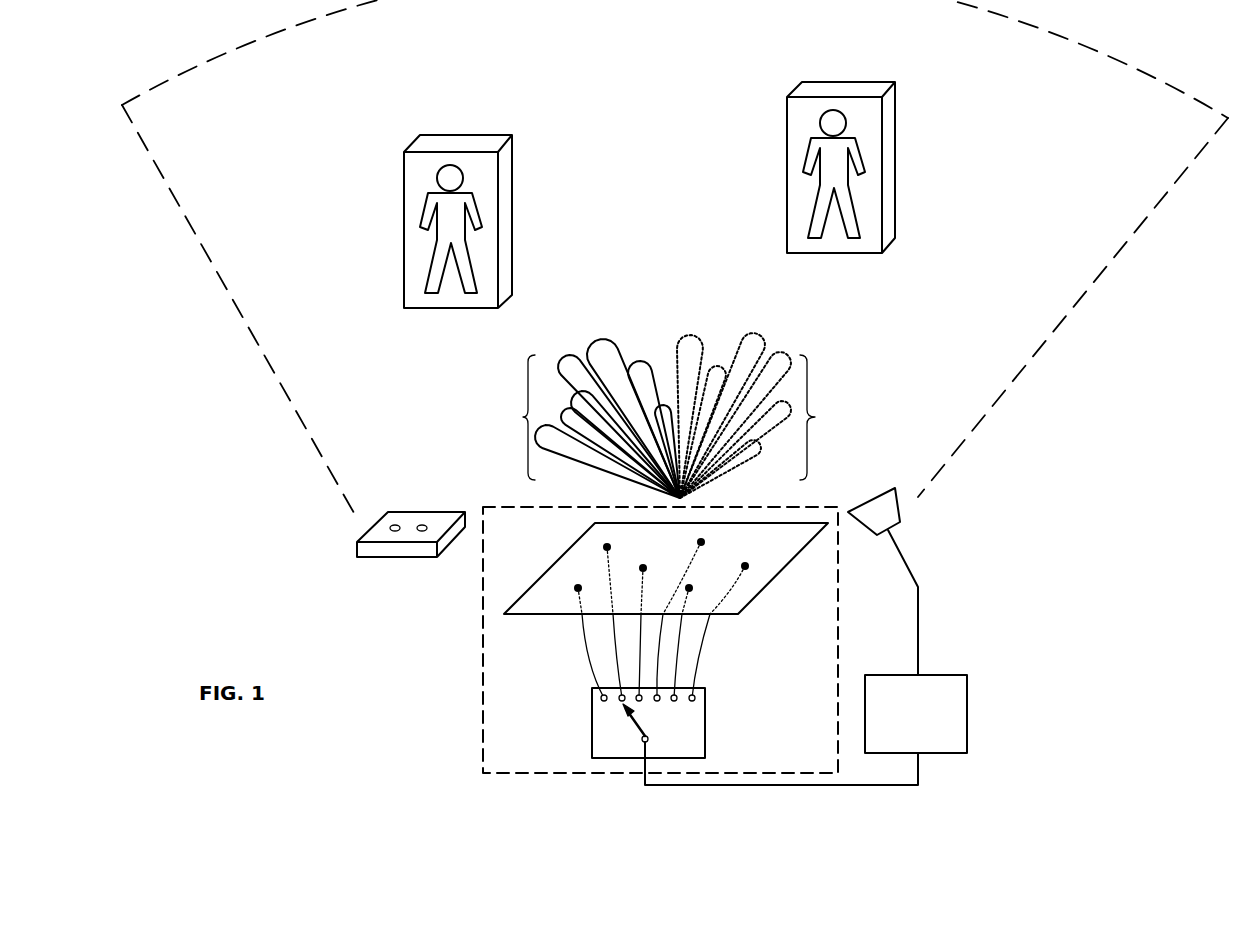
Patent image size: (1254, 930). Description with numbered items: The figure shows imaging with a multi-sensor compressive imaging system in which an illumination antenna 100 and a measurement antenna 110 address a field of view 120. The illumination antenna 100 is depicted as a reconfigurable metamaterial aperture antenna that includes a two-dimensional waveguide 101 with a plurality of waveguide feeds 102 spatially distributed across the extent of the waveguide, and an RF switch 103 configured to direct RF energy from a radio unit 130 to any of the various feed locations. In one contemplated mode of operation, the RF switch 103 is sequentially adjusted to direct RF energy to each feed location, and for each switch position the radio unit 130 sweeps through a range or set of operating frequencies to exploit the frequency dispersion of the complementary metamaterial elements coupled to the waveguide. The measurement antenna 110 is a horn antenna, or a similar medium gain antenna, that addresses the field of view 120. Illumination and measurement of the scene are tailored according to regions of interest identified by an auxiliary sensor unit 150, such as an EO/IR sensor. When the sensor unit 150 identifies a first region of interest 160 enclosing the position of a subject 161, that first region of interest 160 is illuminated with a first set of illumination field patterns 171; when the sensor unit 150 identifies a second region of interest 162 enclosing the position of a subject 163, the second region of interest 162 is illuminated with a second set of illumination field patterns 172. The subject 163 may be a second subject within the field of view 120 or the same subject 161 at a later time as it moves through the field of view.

The illumination antenna 100 is at (475, 637).
The two-dimensional waveguide 101 is at (772, 588).
The waveguide feeds 102 is at (638, 567).
The RF switch 103 is at (713, 723).
The measurement antenna 110 is at (903, 515).
The field of view 120 is at (1043, 362).
The radio unit 130 is at (973, 717).
The sensor unit 150 is at (380, 562).
The first region of interest 160 is at (473, 128).
The subject 161 is at (428, 253).
The second region of interest 162 is at (842, 73).
The subject 163 is at (808, 207).
The first set of illumination field patterns 171 is at (578, 418).
The second set of illumination field patterns 172 is at (769, 415).